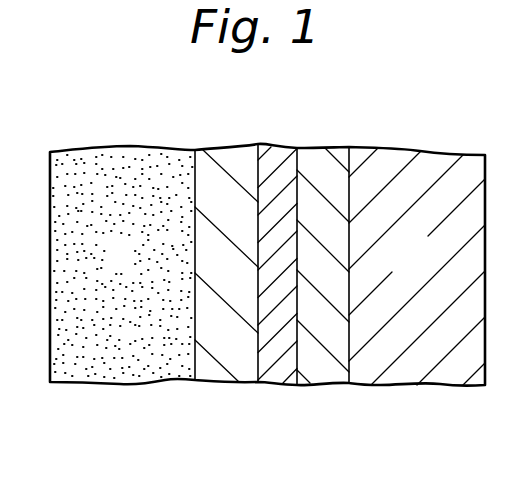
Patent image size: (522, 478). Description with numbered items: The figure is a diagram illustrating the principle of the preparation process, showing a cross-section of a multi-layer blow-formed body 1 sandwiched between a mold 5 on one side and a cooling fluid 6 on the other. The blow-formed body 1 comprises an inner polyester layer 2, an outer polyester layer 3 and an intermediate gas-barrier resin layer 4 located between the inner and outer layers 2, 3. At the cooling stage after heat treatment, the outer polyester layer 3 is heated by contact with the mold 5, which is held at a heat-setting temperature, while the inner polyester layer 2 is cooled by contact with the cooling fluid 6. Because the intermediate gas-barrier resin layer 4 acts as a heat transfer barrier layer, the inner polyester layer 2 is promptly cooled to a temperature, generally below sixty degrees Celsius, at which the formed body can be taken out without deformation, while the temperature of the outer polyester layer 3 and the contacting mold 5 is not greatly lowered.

The multi-layer blow-formed body 1 is at (273, 261).
The inner polyester layer 2 is at (233, 362).
The outer polyester layer 3 is at (327, 362).
The intermediate gas-barrier resin layer 4 is at (283, 358).
The mold 5 is at (420, 268).
The cooling fluid 6 is at (110, 268).